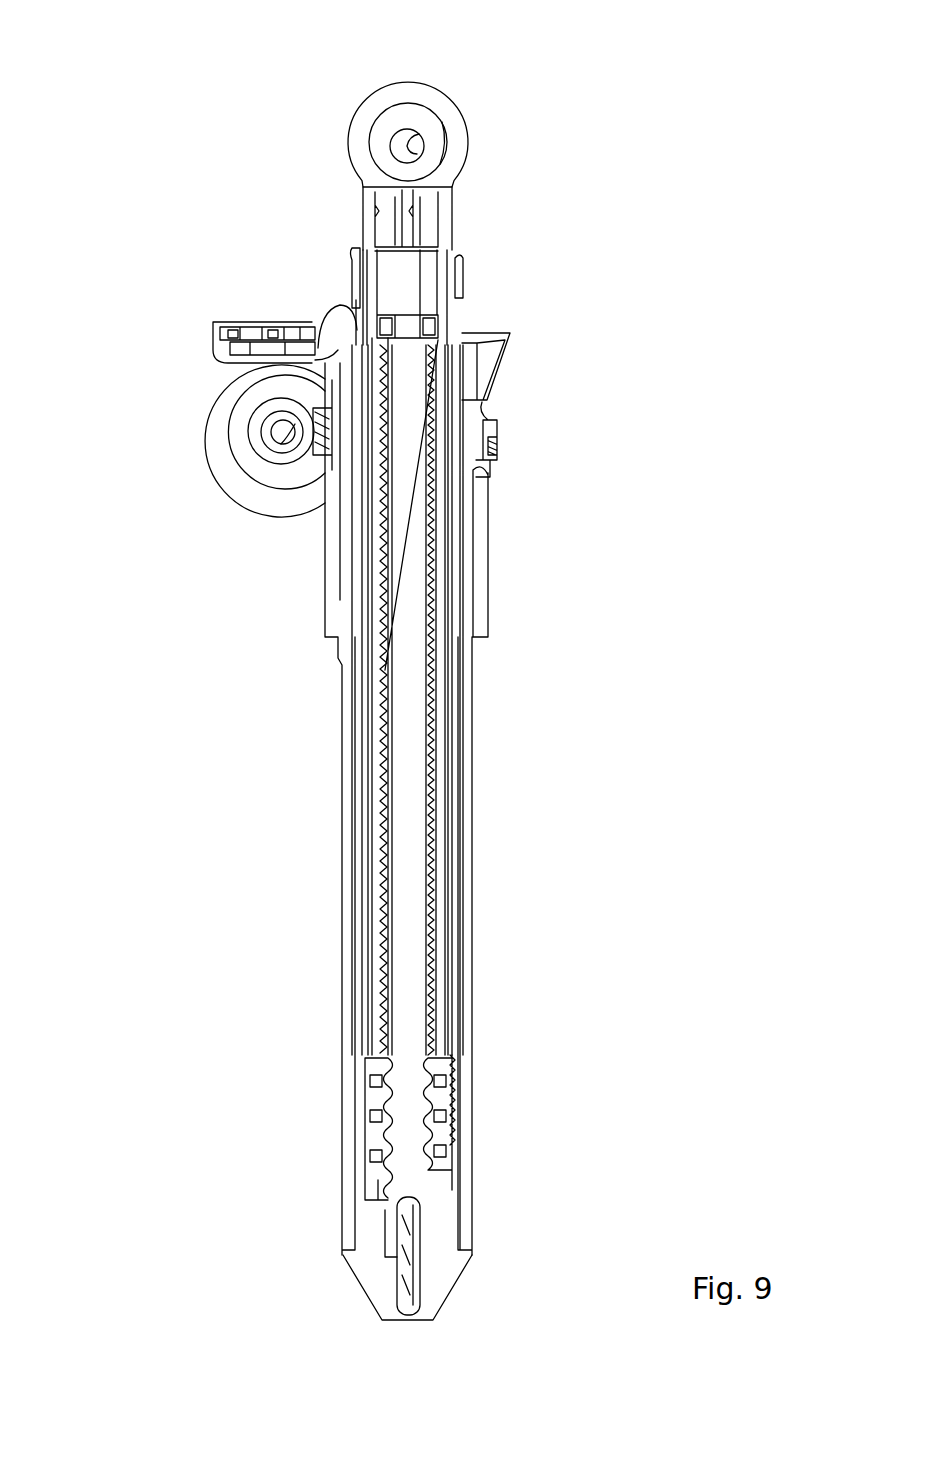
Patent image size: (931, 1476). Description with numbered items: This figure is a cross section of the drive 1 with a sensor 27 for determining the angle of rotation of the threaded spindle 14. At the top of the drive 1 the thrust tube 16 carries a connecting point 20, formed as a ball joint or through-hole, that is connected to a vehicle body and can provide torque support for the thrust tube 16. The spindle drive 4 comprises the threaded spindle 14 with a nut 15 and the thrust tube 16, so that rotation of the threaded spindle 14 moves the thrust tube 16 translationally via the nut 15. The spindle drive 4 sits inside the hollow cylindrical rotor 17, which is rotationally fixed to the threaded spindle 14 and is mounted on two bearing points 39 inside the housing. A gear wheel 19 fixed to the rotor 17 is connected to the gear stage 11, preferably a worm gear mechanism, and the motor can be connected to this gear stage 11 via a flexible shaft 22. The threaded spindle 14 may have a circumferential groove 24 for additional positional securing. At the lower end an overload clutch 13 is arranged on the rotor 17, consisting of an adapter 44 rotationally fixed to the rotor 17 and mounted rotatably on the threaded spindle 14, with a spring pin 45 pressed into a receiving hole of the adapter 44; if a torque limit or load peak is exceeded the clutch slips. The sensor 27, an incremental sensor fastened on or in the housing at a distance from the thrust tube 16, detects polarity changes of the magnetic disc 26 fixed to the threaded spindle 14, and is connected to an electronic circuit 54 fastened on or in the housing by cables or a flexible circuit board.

The drive 1 is at (659, 320).
The spindle drive 4 is at (553, 832).
The first gear stage 11 is at (213, 436).
The flexible shaft 22 is at (283, 433).
The overload clutch 13 is at (361, 1231).
The threaded spindle 14 is at (413, 695).
The nut 15 is at (445, 1047).
The thrust tube 16 is at (447, 620).
The rotor 17 is at (469, 910).
The gear wheel 19 is at (488, 425).
The connecting point 20 is at (358, 136).
The circumferential groove 24 is at (420, 1190).
The magnetic disc 26 is at (383, 322).
The sensor 27 is at (357, 325).
The bearing points 39 is at (485, 355).
The adapter 44 is at (437, 1292).
The spring pin 45 is at (405, 1270).
The electronic circuit 54 is at (222, 327).